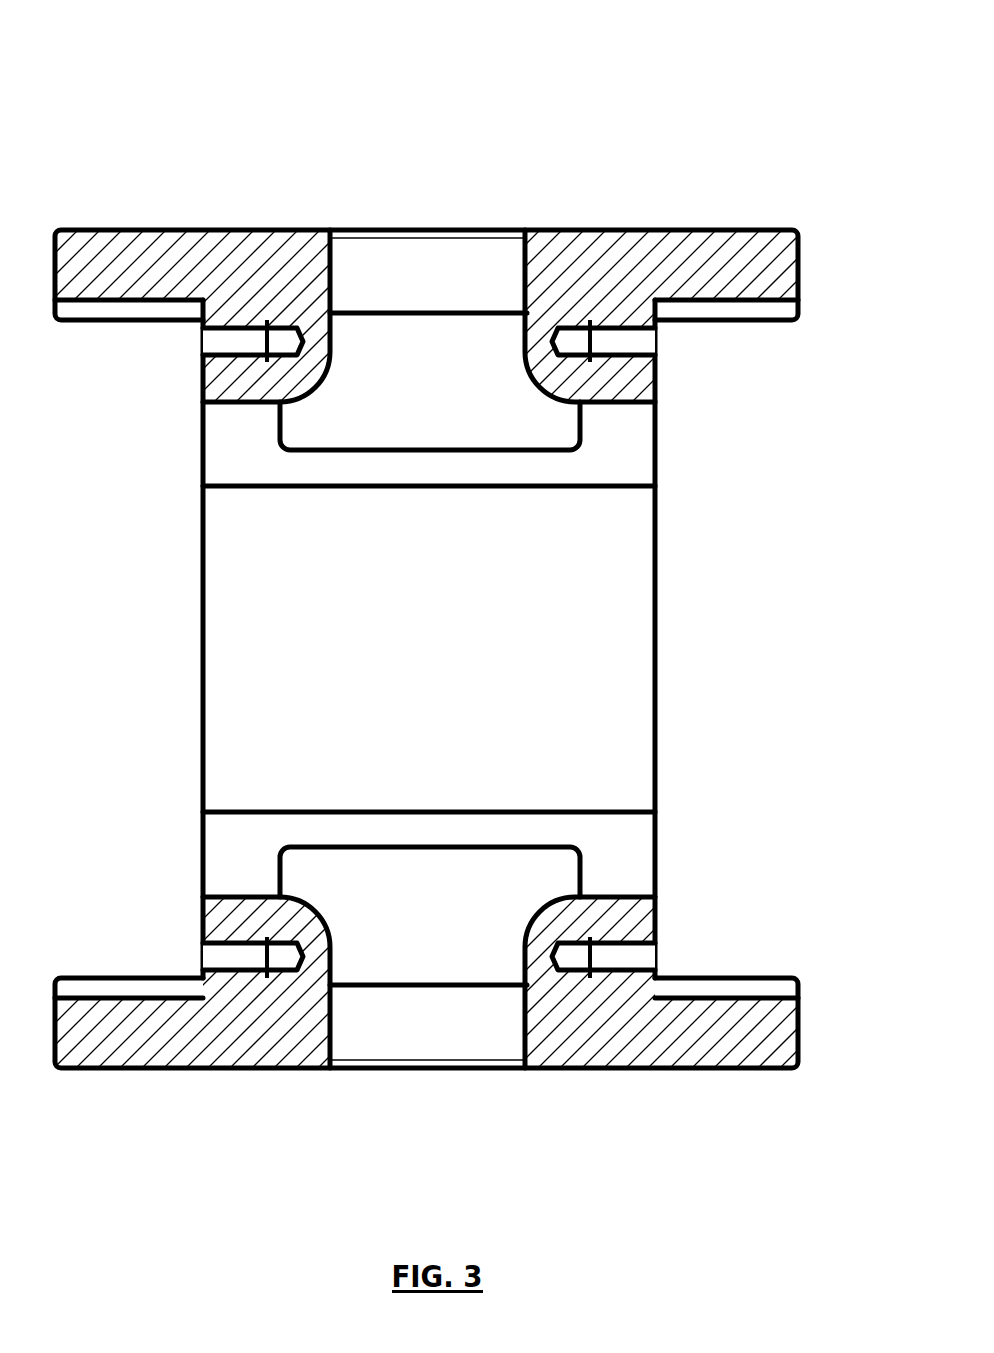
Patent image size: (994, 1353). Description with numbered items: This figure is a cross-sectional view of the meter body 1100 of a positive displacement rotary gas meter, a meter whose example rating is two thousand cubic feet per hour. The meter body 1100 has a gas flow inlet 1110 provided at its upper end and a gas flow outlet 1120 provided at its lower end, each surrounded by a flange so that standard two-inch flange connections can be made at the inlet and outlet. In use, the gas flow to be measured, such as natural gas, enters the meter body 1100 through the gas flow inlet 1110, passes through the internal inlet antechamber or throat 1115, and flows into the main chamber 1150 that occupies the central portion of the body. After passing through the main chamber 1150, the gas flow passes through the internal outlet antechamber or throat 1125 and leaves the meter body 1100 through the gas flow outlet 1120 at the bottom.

The meter body 1100 is at (724, 47).
The gas flow inlet 1110 is at (465, 268).
The internal inlet antechamber or throat 1115 is at (503, 422).
The main chamber 1150 is at (630, 632).
The internal outlet antechamber or throat 1125 is at (520, 883).
The gas flow outlet 1120 is at (463, 1020).